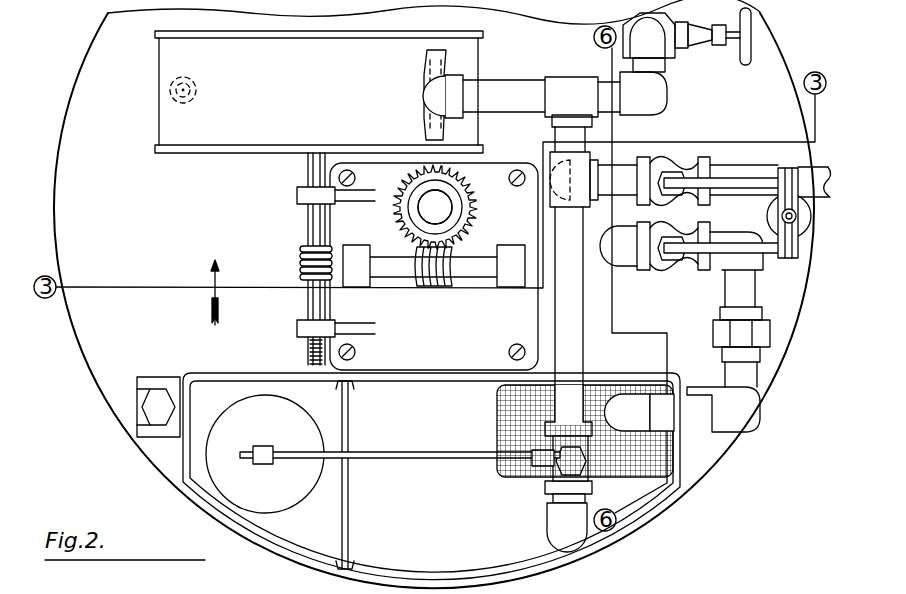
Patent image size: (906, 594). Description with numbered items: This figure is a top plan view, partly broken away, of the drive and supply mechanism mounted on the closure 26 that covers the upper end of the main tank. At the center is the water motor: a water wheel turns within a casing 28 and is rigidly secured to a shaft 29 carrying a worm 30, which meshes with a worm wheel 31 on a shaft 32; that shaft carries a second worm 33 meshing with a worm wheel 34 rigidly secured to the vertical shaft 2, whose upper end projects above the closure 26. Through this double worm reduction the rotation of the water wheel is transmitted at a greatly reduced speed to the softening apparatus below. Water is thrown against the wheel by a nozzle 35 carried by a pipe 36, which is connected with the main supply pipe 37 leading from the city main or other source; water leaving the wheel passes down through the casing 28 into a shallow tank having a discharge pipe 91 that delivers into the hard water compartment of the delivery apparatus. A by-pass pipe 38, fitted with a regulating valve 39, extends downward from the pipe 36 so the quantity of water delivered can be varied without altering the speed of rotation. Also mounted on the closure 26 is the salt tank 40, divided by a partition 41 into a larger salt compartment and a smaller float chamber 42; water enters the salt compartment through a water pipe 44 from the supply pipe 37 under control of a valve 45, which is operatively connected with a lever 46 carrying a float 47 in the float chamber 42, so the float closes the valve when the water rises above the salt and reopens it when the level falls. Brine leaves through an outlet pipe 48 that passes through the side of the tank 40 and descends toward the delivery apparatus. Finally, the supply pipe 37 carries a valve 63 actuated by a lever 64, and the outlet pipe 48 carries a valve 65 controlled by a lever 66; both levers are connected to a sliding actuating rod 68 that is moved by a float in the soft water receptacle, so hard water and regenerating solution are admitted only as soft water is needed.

The vertical shaft 2 is at (435, 207).
The closure 26 is at (97, 372).
The casing 28 is at (175, 124).
The shaft 29 is at (318, 223).
The worm 30 is at (300, 264).
The worm wheel 31 is at (308, 351).
The shaft 32 is at (460, 272).
The second worm 33 is at (421, 280).
The worm wheel 34 is at (478, 216).
The nozzle 35 is at (430, 66).
The pipe 36 is at (493, 90).
The main supply pipe 37 is at (722, 172).
The by-pass pipe 38 is at (655, 67).
The valve 39 is at (693, 37).
The tank 40 is at (680, 480).
The partition 41 is at (349, 512).
The float chamber 42 is at (408, 476).
The water pipe 44 is at (585, 355).
The valve 45 is at (563, 478).
The lever 46 is at (447, 458).
The float 47 is at (265, 454).
The outlet pipe 48 is at (619, 252).
The valve 63 is at (660, 167).
The lever 64 is at (743, 183).
The valve 65 is at (683, 263).
The lever 66 is at (714, 262).
The actuating rod 68 is at (790, 258).
The discharge pipe 91 is at (196, 96).